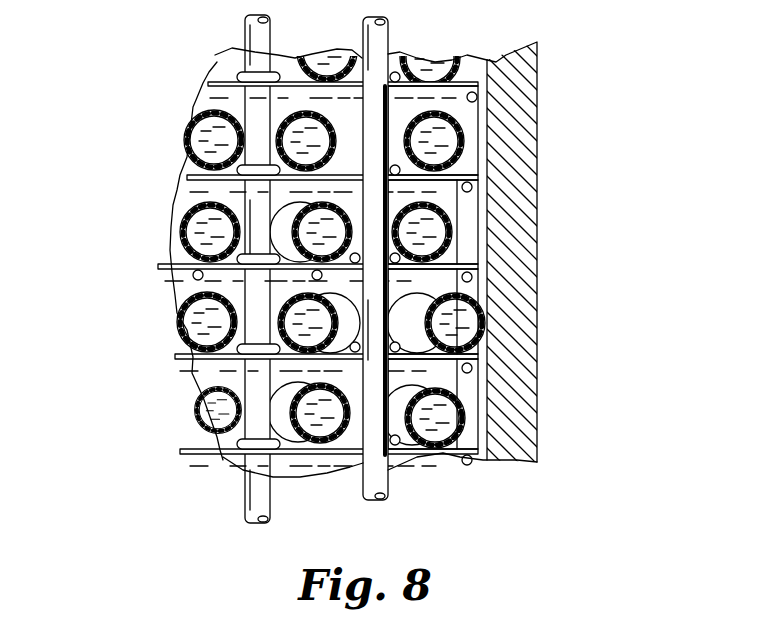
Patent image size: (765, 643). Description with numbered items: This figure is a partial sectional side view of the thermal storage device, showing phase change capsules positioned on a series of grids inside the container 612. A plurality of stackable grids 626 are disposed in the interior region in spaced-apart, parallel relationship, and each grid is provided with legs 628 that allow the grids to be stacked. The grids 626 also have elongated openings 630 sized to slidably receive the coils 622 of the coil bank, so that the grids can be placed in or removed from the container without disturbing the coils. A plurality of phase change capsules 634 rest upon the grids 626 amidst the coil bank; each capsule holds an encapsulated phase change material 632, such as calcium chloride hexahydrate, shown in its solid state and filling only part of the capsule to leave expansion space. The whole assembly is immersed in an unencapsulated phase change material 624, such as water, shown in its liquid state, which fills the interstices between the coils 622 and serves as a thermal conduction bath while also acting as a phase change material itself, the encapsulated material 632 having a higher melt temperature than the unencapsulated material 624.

The container 612 is at (510, 125).
The coils 622 is at (263, 46).
The unencapsulated phase change material 624 is at (185, 193).
The stackable grids 626 is at (164, 70).
The legs 628 is at (463, 195).
The elongated openings 630 is at (407, 428).
The encapsulated phase change material 632 is at (225, 442).
The phase change capsules 634 is at (453, 393).